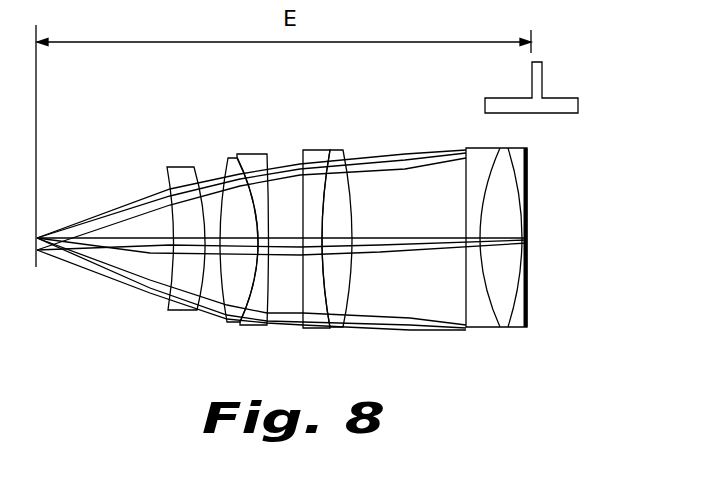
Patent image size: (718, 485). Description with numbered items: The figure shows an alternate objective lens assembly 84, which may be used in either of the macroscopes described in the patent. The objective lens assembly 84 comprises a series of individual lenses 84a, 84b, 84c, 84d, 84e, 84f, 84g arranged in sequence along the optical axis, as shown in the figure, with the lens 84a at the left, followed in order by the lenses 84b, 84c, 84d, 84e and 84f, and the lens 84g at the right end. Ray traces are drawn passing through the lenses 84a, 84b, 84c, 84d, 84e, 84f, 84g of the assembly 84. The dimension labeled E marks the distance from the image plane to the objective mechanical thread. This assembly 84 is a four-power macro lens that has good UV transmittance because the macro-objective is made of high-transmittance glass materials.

The objective lens assembly 84 is at (121, 133).
The individual lens 84a is at (170, 309).
The individual lens 84b is at (228, 166).
The individual lens 84c is at (253, 156).
The individual lens 84d is at (318, 150).
The individual lens 84e is at (347, 157).
The individual lens 84f is at (477, 148).
The individual lens 84g is at (527, 183).